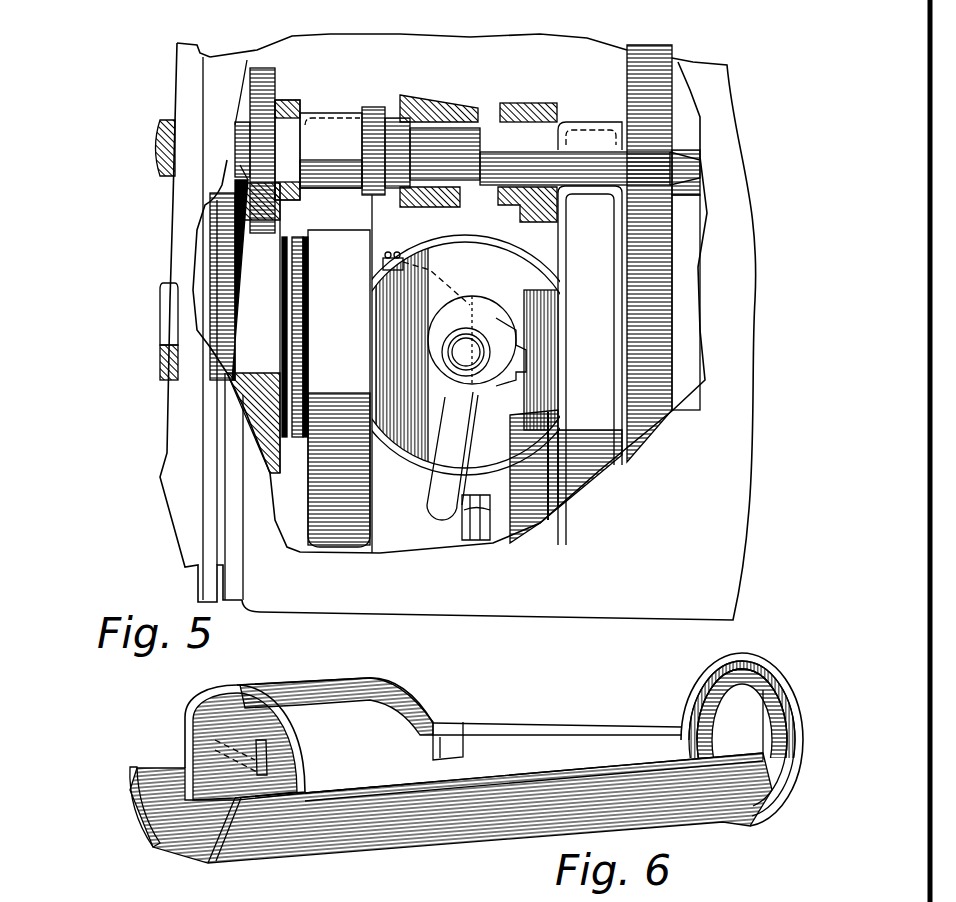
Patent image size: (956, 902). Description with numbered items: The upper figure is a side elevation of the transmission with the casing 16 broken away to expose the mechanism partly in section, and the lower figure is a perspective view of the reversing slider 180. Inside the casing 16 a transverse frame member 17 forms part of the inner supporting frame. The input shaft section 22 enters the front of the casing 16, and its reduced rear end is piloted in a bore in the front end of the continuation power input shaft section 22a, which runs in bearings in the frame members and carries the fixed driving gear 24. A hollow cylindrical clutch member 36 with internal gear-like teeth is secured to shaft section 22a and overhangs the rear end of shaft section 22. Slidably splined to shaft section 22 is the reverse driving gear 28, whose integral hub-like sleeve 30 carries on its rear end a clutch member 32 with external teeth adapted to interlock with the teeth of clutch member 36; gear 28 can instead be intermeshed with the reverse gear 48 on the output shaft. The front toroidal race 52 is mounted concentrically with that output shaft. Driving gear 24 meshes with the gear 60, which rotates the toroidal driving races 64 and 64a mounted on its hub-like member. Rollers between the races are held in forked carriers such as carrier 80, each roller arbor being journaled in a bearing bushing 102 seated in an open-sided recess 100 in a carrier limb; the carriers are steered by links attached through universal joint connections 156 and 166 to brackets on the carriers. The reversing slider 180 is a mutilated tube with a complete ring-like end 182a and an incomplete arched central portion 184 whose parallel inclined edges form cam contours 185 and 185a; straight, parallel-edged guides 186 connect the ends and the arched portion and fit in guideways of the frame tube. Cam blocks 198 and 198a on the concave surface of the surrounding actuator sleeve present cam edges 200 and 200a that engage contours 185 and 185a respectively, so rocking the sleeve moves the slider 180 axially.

In FIG. 5, the transmission casing 16 is at (757, 350).
In FIG. 5, the transverse frame member 17 is at (540, 508).
In FIG. 5, the input shaft section 22 is at (168, 130).
In FIG. 5, the continuation power input shaft section 22a is at (535, 137).
In FIG. 5, the driving gear 24 is at (668, 62).
In FIG. 5, the reverse driving gear 28 is at (262, 84).
In FIG. 5, the hub-like sleeve 30 is at (330, 113).
In FIG. 5, the clutch member 32 is at (378, 108).
In FIG. 5, the hollow cylindrical clutch member 36 is at (432, 97).
In FIG. 5, the reverse gear 48 is at (218, 262).
In FIG. 5, the toroidal race 52 is at (345, 530).
In FIG. 5, the gear 60 is at (672, 300).
In FIG. 5, the toroidal driving race 64 is at (590, 482).
In FIG. 5, the toroidal driving race 64a is at (697, 232).
In FIG. 5, the roller carrier 80 is at (428, 527).
In FIG. 5, the open-sided recess 100 is at (502, 367).
In FIG. 5, the bearing bushing 102 is at (490, 345).
In FIG. 5, the universal joint connection 156 is at (388, 277).
In FIG. 5, the universal joint connection 166 is at (525, 381).
In FIG. 6, the reversing slider 180 is at (372, 831).
In FIG. 6, the ring-like end 182a is at (785, 695).
In FIG. 6, the arched central portion 184 is at (382, 722).
In FIG. 6, the cam contour 185 is at (272, 705).
In FIG. 6, the cam contour 185a is at (385, 695).
In FIG. 6, the guide 186 is at (572, 775).
In FIG. 6, the cam block 198 is at (240, 758).
In FIG. 6, the cam block 198a is at (482, 748).
In FIG. 6, the cam edge 200 is at (200, 727).
In FIG. 6, the cam edge 200a is at (440, 747).